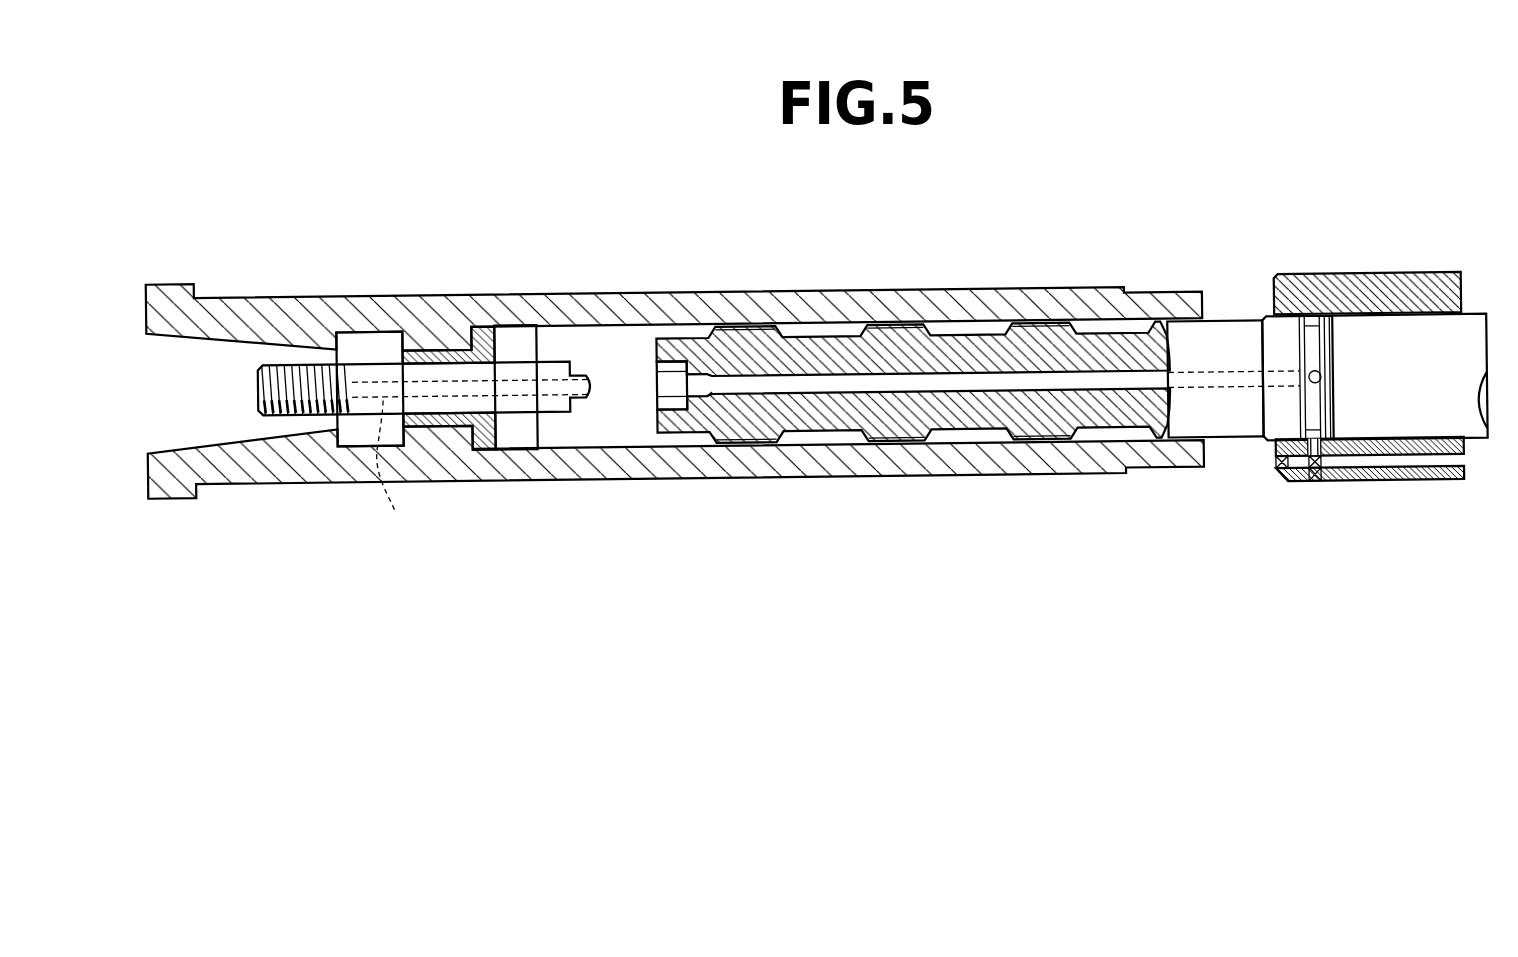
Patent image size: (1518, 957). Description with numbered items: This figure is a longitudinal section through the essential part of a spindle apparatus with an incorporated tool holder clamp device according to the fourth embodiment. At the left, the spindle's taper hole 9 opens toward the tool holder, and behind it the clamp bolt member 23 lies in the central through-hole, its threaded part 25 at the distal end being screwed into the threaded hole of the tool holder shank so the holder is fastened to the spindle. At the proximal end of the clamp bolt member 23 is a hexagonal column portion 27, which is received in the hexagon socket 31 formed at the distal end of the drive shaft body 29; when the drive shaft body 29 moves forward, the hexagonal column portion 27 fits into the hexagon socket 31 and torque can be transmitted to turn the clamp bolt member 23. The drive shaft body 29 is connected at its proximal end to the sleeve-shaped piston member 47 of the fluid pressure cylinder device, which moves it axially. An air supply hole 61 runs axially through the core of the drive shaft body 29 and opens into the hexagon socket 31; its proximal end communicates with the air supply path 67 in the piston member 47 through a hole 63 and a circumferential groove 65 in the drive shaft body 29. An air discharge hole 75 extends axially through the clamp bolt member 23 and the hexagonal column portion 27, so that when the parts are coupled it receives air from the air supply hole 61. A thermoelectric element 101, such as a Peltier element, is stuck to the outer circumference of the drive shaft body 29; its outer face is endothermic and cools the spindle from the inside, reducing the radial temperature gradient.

The taper hole 9 is at (212, 428).
The clamp bolt member 23 is at (440, 432).
The threaded part 25 is at (288, 416).
The hexagonal column portion 27 is at (553, 405).
The drive shaft body 29 is at (957, 420).
The hexagon socket 31 is at (672, 412).
The piston member 47 is at (1365, 296).
The air supply hole 61 is at (1117, 399).
The hole 63 is at (1318, 386).
The circumferential groove 65 is at (1318, 412).
The air supply path 67 is at (1343, 474).
The air discharge hole 75 is at (386, 480).
The thermoelectric element 101 is at (737, 447).